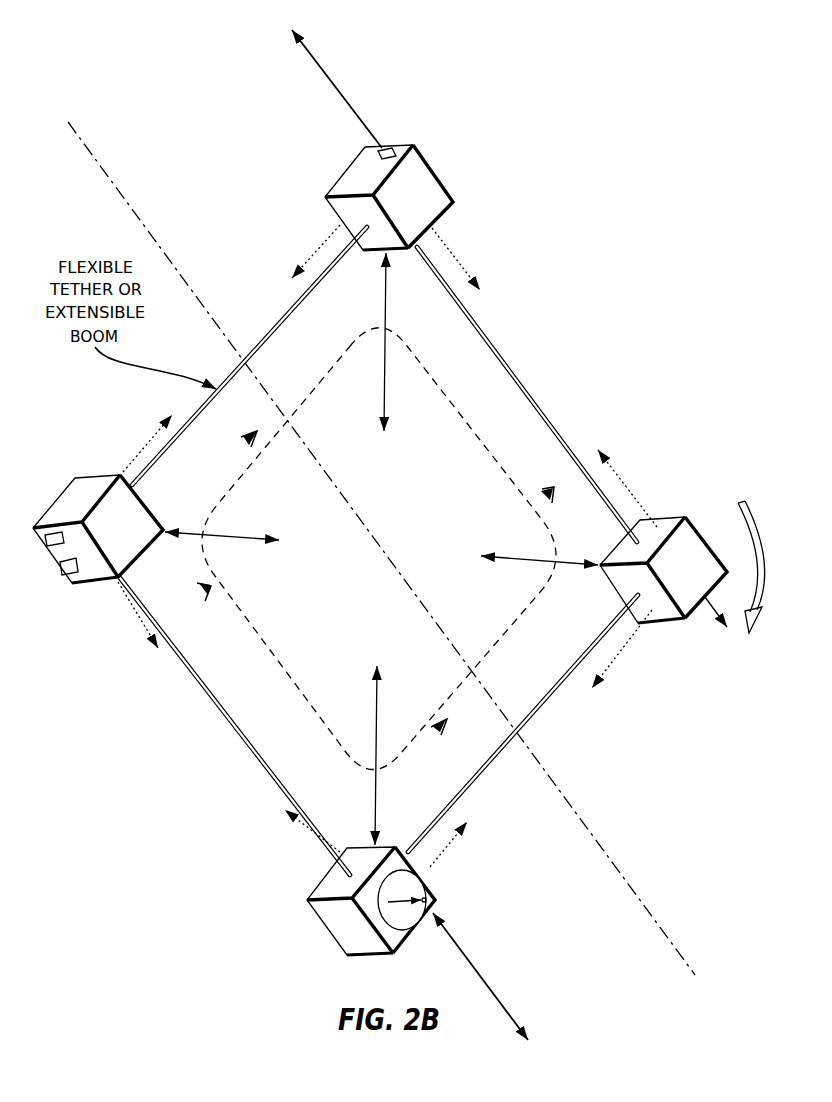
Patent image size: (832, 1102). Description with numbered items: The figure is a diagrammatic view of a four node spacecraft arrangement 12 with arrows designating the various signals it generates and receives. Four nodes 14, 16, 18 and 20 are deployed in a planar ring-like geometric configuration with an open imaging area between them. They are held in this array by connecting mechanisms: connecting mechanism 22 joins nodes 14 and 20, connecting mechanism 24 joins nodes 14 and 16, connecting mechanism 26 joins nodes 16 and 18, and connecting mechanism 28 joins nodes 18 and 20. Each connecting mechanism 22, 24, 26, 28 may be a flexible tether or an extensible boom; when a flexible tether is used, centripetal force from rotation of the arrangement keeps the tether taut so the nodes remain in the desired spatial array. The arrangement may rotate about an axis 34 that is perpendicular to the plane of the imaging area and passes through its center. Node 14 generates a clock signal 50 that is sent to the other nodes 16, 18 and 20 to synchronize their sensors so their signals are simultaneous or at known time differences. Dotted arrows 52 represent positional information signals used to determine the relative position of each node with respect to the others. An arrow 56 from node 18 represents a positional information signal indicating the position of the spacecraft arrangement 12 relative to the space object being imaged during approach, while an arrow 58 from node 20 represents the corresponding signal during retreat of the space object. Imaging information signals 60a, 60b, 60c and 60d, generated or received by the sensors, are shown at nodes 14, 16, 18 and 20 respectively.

The spacecraft arrangement 12 is at (574, 321).
The node 14 is at (327, 934).
The node 16 is at (58, 488).
The node 18 is at (437, 171).
The node 20 is at (686, 515).
The connecting mechanism 22 is at (495, 767).
The connecting mechanism 24 is at (237, 732).
The connecting mechanism 26 is at (266, 335).
The connecting mechanism 28 is at (477, 317).
The axis 34 is at (595, 838).
The clock signal 50 is at (256, 652).
The positional information signals 52 is at (320, 247).
The positional information signal 56 is at (316, 57).
The positional information signal 58 is at (707, 613).
The imaging information signal 60a is at (373, 698).
The imaging information signal 60b is at (243, 542).
The imaging information signal 60c is at (384, 378).
The imaging information signal 60d is at (523, 560).